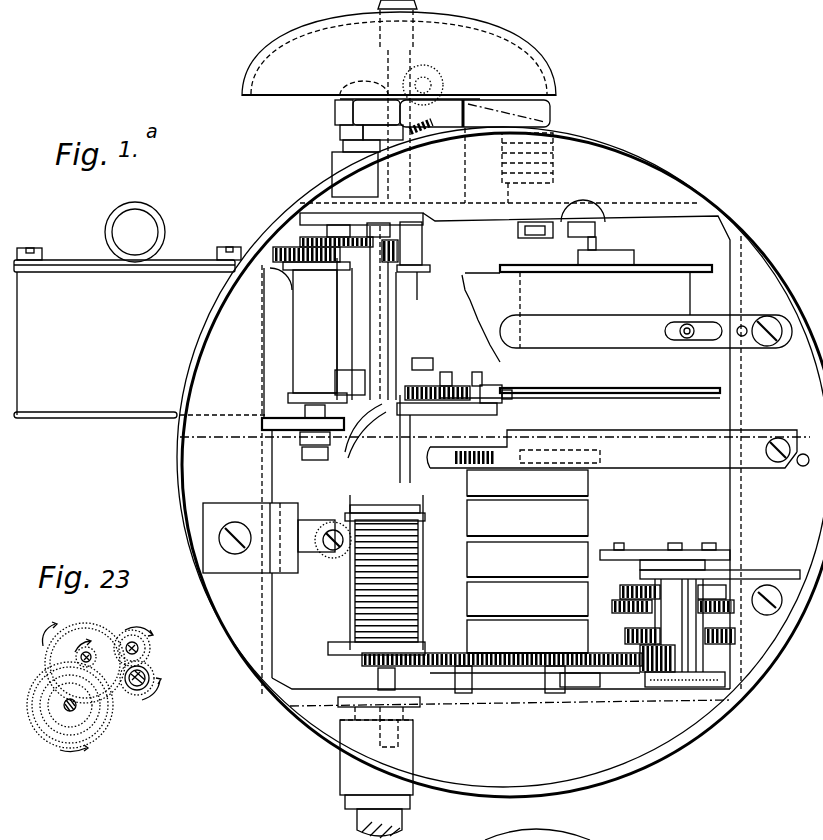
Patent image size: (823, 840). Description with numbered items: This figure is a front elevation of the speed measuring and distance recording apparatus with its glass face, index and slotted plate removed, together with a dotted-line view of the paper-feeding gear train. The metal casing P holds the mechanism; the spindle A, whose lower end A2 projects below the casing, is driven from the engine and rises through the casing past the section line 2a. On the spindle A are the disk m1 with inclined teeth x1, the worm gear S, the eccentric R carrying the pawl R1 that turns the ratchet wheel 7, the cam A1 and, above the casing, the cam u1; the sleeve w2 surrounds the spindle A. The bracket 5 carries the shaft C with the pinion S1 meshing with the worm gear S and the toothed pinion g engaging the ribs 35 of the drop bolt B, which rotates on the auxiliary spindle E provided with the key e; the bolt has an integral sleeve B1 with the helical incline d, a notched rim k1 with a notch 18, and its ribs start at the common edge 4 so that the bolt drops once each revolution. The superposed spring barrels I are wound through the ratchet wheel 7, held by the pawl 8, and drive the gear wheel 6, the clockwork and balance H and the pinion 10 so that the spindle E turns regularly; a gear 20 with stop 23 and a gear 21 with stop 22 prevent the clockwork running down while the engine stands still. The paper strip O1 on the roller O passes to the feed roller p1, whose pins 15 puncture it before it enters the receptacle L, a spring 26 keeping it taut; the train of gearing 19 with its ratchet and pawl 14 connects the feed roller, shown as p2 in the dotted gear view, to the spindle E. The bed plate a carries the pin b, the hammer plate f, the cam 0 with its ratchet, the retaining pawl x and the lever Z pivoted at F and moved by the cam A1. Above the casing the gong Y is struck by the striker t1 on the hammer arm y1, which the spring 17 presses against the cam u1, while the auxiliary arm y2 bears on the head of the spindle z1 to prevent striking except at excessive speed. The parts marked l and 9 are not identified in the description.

In FIG. 1A, the casing P is at (795, 284).
In FIG. 1A, the gong Y is at (399, 48).
In FIG. 1A, the striker t1 is at (436, 75).
In FIG. 1A, the hammer arm y1 is at (440, 110).
In FIG. 1A, the cam u1 is at (338, 110).
In FIG. 1A, the auxiliary arm y2 is at (447, 138).
In FIG. 1A, the spring 17 is at (470, 110).
In FIG. 1A, the pins 15 is at (290, 284).
In FIG. 1A, the ratchet and pawl 14 is at (280, 250).
In FIG. 23, the ratchet and pawl 14 is at (45, 694).
In FIG. 1A, the train of gearing 19 is at (288, 240).
In FIG. 23, the train of gearing 19 is at (88, 674).
In FIG. 1A, the feed roller p1 is at (317, 336).
In FIG. 1A, the lever l is at (353, 313).
In FIG. 1A, the spindle z1 is at (400, 298).
In FIG. 1A, the auxiliary spindle E is at (392, 325).
In FIG. 23, the auxiliary spindle E is at (143, 675).
In FIG. 1A, the pivot F is at (435, 337).
In FIG. 1A, the spindle A is at (323, 344).
In FIG. 1A, the cam A1 is at (345, 368).
In FIG. 1A, the strip of paper O1 is at (465, 275).
In FIG. 1A, the lever Z is at (465, 337).
In FIG. 1A, the roller O is at (670, 265).
In FIG. 1A, the spring 26 is at (646, 310).
In FIG. 1A, the bracket bed plate a is at (447, 408).
In FIG. 1A, the key e is at (433, 360).
In FIG. 1A, the toothed pinion g is at (445, 372).
In FIG. 1A, the pin b is at (476, 372).
In FIG. 1A, the spring retaining pawl x is at (495, 386).
In FIG. 1A, the cam 0 is at (432, 402).
In FIG. 1A, the hammer plate f is at (454, 432).
In FIG. 1A, the section line 2a is at (464, 427).
In FIG. 1A, the pawl 8 is at (618, 449).
In FIG. 1A, the ratchet wheel 7 is at (488, 465).
In FIG. 1A, the helical incline d is at (383, 453).
In FIG. 1A, the eccentric R is at (303, 451).
In FIG. 1A, the pawl R1 is at (433, 448).
In FIG. 1A, the pinion S1 is at (335, 500).
In FIG. 1A, the bracket 5 is at (258, 566).
In FIG. 1A, the worm gear S is at (333, 552).
In FIG. 1A, the shaft C is at (304, 592).
In FIG. 1A, the starting edge 4 is at (350, 590).
In FIG. 1A, the sleeve w2 is at (352, 612).
In FIG. 1A, the drop bolt B is at (393, 572).
In FIG. 1A, the notch 18 is at (385, 506).
In FIG. 1A, the notched rim k1 is at (422, 516).
In FIG. 1A, the peripheral ribs 35 is at (433, 544).
In FIG. 1A, the sleeve B1 is at (372, 490).
In FIG. 1A, the inclined teeth x1 is at (345, 645).
In FIG. 1A, the disk m1 is at (345, 655).
In FIG. 1A, the pinion 10 is at (366, 665).
In FIG. 1A, the set of springs and barrels I is at (527, 561).
In FIG. 1A, the gear wheel 6 is at (549, 664).
In FIG. 1A, the gear 20 is at (592, 666).
In FIG. 1A, the gear 9 is at (642, 670).
In FIG. 1A, the gear 21 is at (470, 696).
In FIG. 1A, the stop 22 is at (507, 696).
In FIG. 1A, the stop 23 is at (526, 696).
In FIG. 1A, the clockwork gearing and balance H is at (676, 550).
In FIG. 1A, the spindle A2 is at (360, 818).
In FIG. 1A, the receptacle L is at (127, 310).
In FIG. 23, the feed roller p2 is at (78, 712).